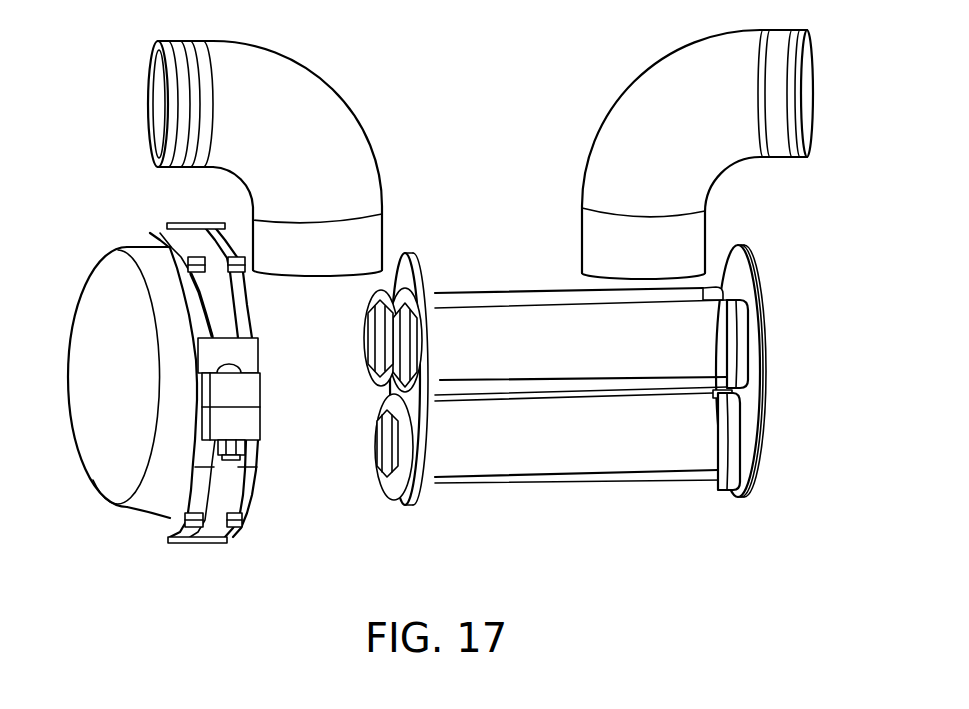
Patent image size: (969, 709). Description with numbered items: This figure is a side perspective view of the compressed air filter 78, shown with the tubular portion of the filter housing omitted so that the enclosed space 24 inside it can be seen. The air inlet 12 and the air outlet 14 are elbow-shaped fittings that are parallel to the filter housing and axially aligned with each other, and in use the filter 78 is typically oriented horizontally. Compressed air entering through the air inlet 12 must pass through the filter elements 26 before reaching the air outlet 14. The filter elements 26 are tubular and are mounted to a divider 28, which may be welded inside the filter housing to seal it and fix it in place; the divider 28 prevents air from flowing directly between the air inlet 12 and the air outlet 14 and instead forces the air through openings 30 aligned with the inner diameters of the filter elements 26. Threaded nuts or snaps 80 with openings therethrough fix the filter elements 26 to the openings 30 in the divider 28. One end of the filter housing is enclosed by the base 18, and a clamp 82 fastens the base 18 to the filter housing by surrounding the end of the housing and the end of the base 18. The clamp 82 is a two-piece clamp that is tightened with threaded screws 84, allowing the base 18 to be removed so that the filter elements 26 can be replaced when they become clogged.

The air inlet 12 is at (152, 80).
The air outlet 14 is at (813, 70).
The base 18 is at (85, 310).
The enclosed space 24 is at (500, 267).
The filter elements 26 is at (557, 292).
The divider 28 is at (428, 467).
The openings 30 is at (368, 320).
The filter 78 is at (426, 70).
The threaded nuts or snaps 80 is at (406, 300).
The clamp 82 is at (203, 232).
The threaded screws 84 is at (238, 457).